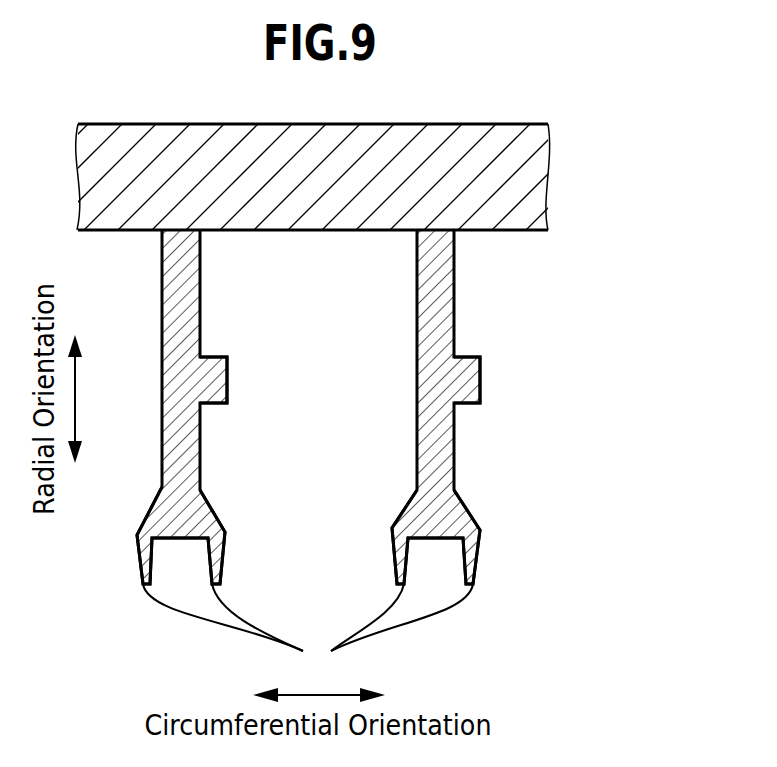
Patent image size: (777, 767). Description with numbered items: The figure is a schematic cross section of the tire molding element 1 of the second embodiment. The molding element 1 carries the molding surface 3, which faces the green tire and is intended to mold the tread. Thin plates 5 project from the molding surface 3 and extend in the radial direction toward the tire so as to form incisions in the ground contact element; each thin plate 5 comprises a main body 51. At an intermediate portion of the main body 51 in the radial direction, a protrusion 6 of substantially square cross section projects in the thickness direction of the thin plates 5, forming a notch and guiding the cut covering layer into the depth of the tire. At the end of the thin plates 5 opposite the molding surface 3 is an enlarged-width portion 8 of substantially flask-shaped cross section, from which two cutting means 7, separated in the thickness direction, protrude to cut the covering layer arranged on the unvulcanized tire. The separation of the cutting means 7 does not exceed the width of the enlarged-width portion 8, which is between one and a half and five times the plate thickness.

The tire molding element 1 is at (485, 207).
The molding surface 3 is at (497, 232).
The thin plates 5 is at (200, 257).
The main body 51 is at (182, 432).
The protrusion 6 is at (208, 377).
The cutting means 7 is at (308, 628).
The enlarged-width portion 8 is at (428, 510).